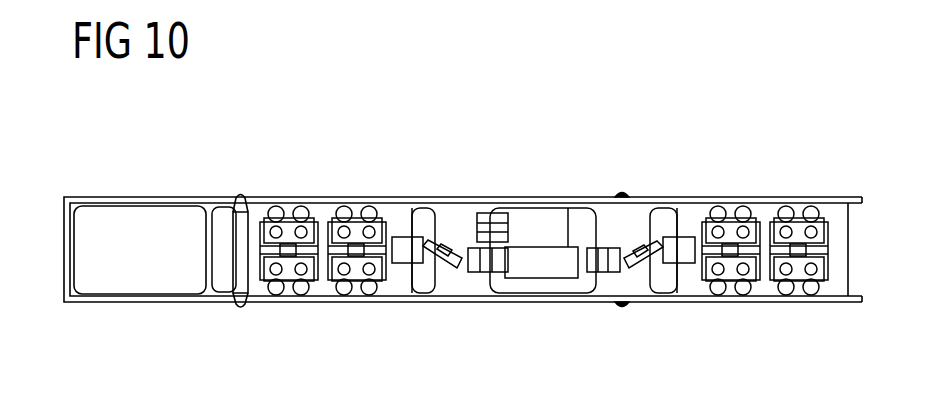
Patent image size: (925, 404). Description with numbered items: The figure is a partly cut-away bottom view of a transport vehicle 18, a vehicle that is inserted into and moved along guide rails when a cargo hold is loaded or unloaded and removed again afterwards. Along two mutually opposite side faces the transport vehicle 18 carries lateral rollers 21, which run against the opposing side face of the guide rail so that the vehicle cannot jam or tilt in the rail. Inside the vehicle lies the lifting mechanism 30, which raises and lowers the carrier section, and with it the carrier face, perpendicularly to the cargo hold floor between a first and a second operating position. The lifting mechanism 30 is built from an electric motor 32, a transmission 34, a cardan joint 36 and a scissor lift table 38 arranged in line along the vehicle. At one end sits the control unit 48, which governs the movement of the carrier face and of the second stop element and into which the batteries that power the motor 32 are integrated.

The transport vehicle 18 is at (838, 168).
The lateral rollers 21 is at (240, 192).
The lifting mechanism 30 is at (483, 118).
The motor 32 is at (503, 210).
The transmission 34 is at (559, 211).
The cardan joint 36 is at (452, 208).
The scissor lift table 38 is at (313, 214).
The control unit 48 is at (135, 216).